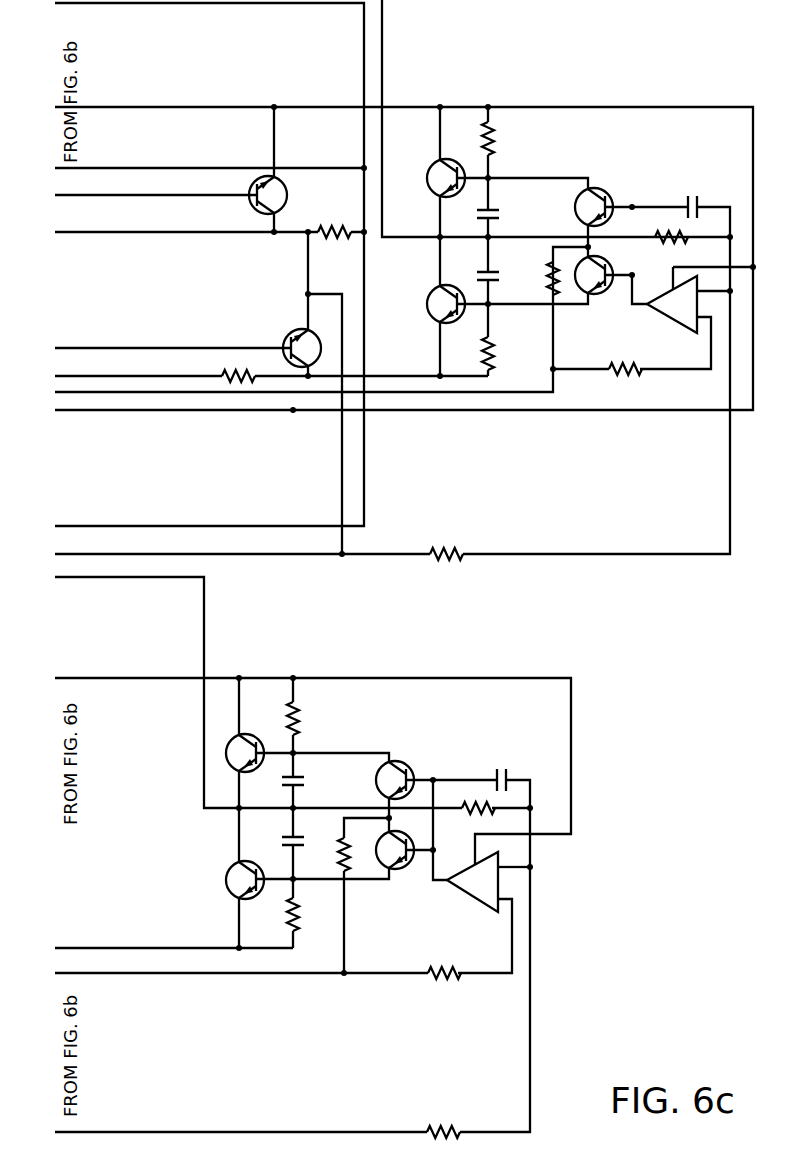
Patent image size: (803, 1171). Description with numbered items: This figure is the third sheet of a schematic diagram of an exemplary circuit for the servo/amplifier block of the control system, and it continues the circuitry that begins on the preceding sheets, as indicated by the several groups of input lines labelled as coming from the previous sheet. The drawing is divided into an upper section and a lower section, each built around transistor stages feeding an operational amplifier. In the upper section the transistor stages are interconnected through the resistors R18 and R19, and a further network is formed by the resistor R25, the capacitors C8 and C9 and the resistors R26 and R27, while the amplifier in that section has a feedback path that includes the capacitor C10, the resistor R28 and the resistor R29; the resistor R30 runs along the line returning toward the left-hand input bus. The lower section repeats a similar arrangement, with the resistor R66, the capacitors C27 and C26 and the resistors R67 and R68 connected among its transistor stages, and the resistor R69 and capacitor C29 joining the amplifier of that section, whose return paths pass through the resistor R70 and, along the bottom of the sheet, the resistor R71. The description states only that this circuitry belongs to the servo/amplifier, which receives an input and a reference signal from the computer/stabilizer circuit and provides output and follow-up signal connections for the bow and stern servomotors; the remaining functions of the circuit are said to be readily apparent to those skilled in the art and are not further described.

The resistor R18 is at (332, 217).
The resistor R19 is at (220, 368).
The resistor R25 is at (508, 138).
The resistor R26 is at (536, 270).
The resistor R27 is at (506, 343).
The resistor R28 is at (685, 249).
The resistor R29 is at (639, 355).
The resistor R30 is at (454, 540).
The resistor R66 is at (313, 718).
The resistor R67 is at (324, 856).
The resistor R68 is at (312, 924).
The resistor R69 is at (466, 799).
The resistor R70 is at (449, 962).
The resistor R71 is at (455, 1120).
The capacitor C8 is at (499, 200).
The capacitor C9 is at (498, 288).
The capacitor C10 is at (713, 202).
The capacitor C26 is at (277, 830).
The capacitor C27 is at (313, 783).
The capacitor C29 is at (522, 774).